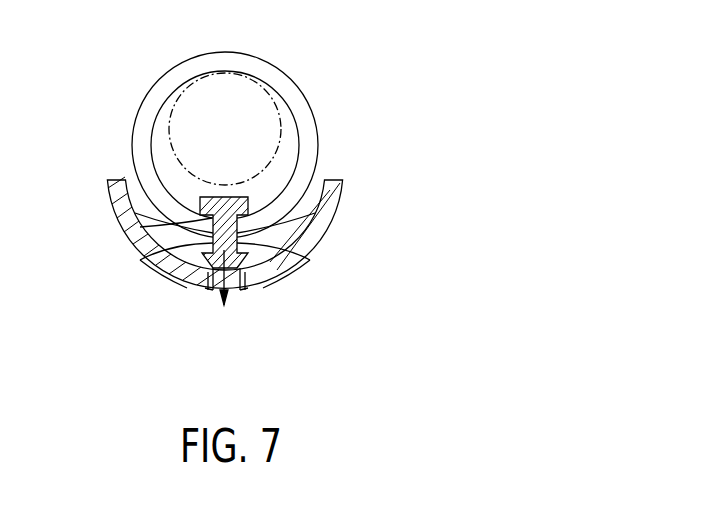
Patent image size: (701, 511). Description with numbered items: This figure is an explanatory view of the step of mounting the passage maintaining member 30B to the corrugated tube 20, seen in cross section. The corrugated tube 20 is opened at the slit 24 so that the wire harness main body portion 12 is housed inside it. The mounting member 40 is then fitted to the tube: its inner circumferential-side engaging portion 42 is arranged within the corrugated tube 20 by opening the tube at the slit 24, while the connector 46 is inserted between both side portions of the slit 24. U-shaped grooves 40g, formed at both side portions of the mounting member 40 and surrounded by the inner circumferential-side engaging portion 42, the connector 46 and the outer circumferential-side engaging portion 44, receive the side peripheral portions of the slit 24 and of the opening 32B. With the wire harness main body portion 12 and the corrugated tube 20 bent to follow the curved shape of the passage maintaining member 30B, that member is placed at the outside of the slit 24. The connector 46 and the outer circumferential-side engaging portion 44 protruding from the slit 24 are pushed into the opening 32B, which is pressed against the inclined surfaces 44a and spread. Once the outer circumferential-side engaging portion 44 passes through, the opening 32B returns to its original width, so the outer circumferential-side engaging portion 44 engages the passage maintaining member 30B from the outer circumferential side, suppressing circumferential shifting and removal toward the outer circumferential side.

The corrugated tube 20 is at (293, 78).
The wire harness main body portion 12 is at (283, 114).
The slit 24 is at (237, 226).
The passage maintaining member 30B is at (310, 262).
The mounting member 40 is at (202, 196).
The inner circumferential-side engaging portion 42 is at (250, 196).
The connector 46 is at (140, 227).
The U-shaped groove 40g is at (142, 257).
The outer circumferential-side engaging portion 44 is at (235, 293).
The inclined surface 44a is at (196, 276).
The opening 32B is at (215, 290).